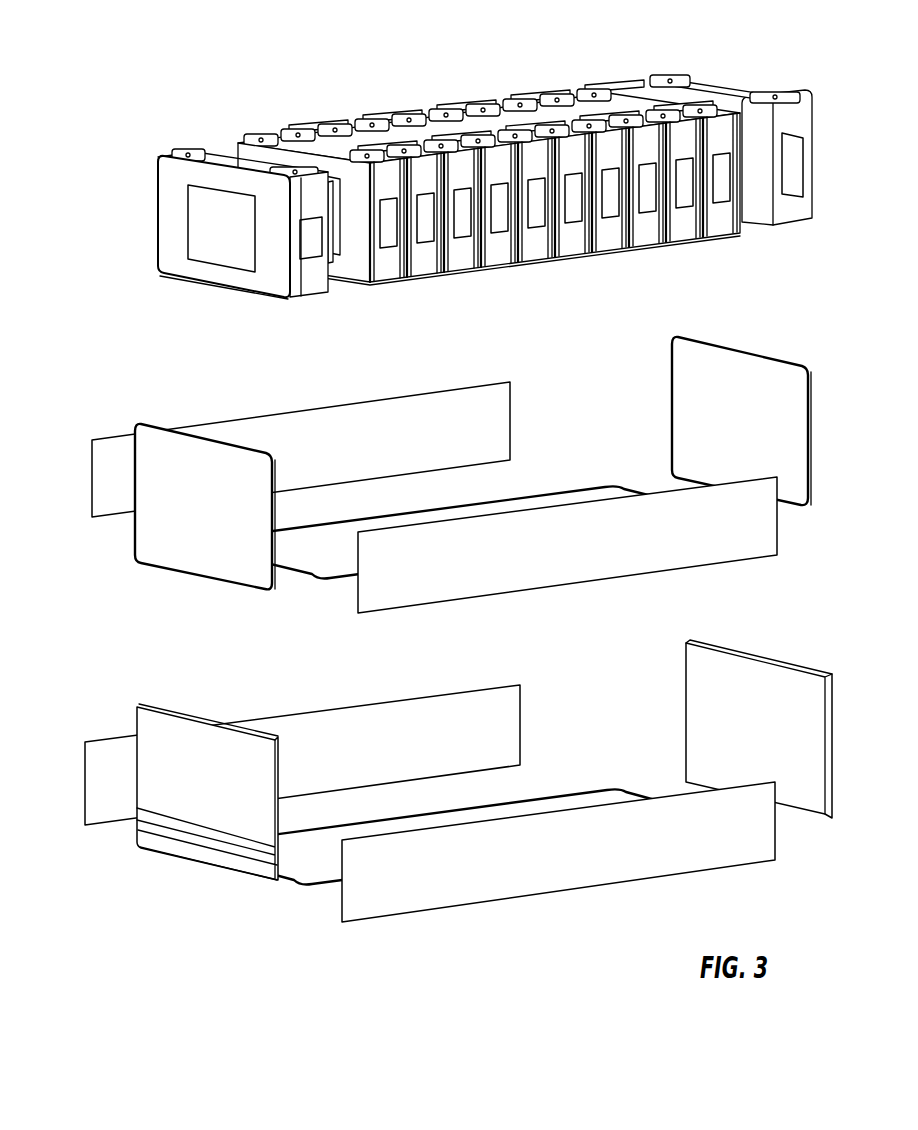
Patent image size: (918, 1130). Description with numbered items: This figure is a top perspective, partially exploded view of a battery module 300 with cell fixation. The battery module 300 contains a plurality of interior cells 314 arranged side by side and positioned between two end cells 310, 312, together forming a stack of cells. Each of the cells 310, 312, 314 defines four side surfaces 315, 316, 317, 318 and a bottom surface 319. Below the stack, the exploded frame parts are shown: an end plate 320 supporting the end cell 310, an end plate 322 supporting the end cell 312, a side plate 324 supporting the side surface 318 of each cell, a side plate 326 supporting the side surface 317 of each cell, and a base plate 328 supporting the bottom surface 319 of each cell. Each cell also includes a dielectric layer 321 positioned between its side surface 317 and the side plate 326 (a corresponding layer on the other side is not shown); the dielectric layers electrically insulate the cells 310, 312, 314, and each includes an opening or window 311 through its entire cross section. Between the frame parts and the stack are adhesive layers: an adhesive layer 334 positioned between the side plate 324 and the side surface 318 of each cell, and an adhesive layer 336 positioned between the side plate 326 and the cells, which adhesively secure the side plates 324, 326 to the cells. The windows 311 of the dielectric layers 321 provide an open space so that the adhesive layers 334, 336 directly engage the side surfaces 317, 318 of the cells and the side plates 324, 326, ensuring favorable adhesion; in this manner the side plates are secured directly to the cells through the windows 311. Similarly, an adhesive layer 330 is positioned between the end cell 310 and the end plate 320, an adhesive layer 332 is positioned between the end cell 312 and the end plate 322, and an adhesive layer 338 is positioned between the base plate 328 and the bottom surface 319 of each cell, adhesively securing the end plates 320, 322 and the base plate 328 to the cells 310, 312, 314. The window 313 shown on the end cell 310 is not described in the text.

The battery module 300 is at (200, 50).
The end cell 310 is at (158, 210).
The window 311 is at (462, 220).
The end cell 312 is at (813, 122).
The cell window 313 is at (193, 200).
The interior cells 314 is at (255, 126).
The side surface 315 is at (180, 262).
The side surface 316 is at (328, 287).
The side surface 317 is at (312, 287).
The side surface 318 is at (158, 248).
The bottom surface 319 is at (237, 292).
The dielectric layer 321 is at (463, 260).
The end plate 320 is at (157, 840).
The end plate 322 is at (684, 737).
The side plate 324 is at (93, 743).
The side plate 326 is at (757, 861).
The base plate 328 is at (553, 793).
The adhesive layer 330 is at (137, 538).
The adhesive layer 332 is at (783, 362).
The adhesive layer 334 is at (423, 393).
The adhesive layer 336 is at (777, 527).
The adhesive layer 338 is at (322, 580).